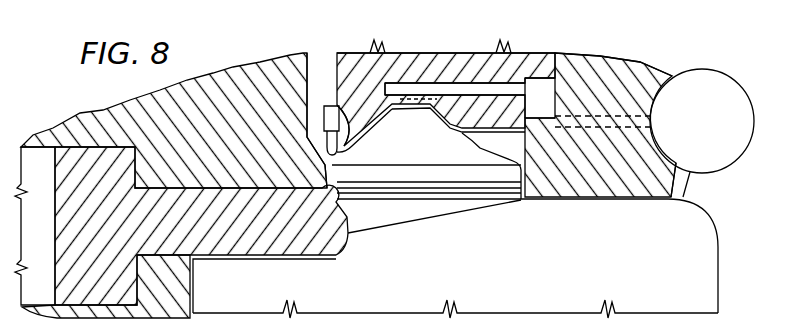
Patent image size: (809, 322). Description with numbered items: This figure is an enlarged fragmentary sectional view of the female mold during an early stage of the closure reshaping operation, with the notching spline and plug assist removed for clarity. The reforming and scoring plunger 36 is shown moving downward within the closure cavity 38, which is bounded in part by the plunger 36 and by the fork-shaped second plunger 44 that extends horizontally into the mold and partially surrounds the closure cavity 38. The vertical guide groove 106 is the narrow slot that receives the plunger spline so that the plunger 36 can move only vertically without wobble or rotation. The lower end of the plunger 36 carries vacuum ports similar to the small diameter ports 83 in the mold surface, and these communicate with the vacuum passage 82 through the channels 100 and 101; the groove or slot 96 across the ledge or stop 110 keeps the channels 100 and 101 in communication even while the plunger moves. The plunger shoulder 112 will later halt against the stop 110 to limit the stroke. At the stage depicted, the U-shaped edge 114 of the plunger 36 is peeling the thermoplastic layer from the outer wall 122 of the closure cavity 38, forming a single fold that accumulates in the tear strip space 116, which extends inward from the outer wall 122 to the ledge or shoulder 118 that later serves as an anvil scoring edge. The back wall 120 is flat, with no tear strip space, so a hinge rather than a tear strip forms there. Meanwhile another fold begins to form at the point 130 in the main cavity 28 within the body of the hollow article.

The main cavity 28 is at (492, 277).
The reforming and scoring plunger 36 is at (352, 82).
The closure cavity 38 is at (421, 125).
The fork-shaped second plunger 44 is at (138, 157).
The vacuum passage 82 is at (707, 129).
The small diameter ports 83 is at (686, 172).
The groove or slot 96 is at (540, 122).
The channel 100 is at (445, 87).
The channel 101 is at (653, 112).
The vertical guide groove 106 is at (308, 128).
The ledge or stop 110 is at (538, 117).
The plunger shoulder 112 is at (548, 81).
The U-shaped edge 114 is at (347, 102).
The tear strip space 116 is at (345, 155).
The ledge or shoulder 118 is at (340, 203).
The back wall 120 is at (480, 148).
The outer wall 122 is at (325, 155).
The point 130 is at (525, 200).